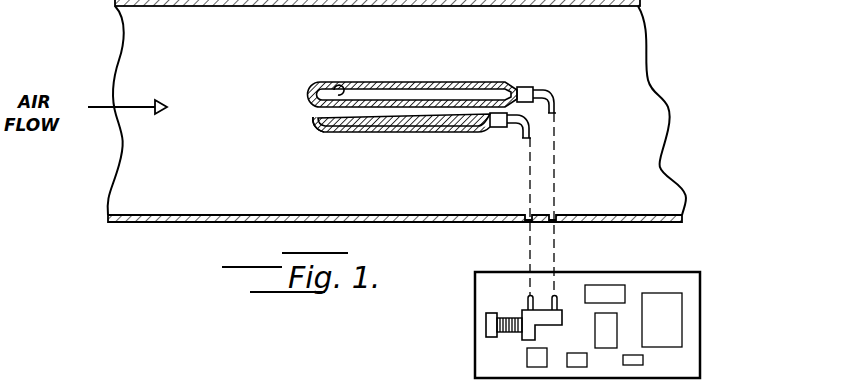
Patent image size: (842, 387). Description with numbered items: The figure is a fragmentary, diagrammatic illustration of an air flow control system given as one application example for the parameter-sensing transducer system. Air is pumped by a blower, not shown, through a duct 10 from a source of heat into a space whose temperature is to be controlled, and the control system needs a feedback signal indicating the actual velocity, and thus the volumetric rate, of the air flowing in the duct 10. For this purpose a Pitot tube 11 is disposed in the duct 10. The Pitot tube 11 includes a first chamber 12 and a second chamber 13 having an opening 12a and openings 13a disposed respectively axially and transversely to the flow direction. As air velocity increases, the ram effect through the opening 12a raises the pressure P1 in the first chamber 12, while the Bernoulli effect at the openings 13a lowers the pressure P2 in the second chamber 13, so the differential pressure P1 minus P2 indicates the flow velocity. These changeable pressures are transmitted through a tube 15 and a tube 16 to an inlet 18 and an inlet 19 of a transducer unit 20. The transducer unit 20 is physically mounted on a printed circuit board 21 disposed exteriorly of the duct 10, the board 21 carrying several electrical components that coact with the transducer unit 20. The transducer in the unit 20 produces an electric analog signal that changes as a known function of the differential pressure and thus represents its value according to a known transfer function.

The duct 10 is at (116, 222).
The Pitot tube 11 is at (327, 66).
The first chamber 12 is at (384, 126).
The opening 12a is at (310, 112).
The second chamber 13 is at (330, 84).
The openings 13a is at (447, 81).
The tube 15 is at (520, 134).
The tube 16 is at (560, 97).
The inlet 18 is at (528, 298).
The inlet 19 is at (558, 298).
The transducer unit 20 is at (482, 332).
The printed circuit board 21 is at (688, 272).